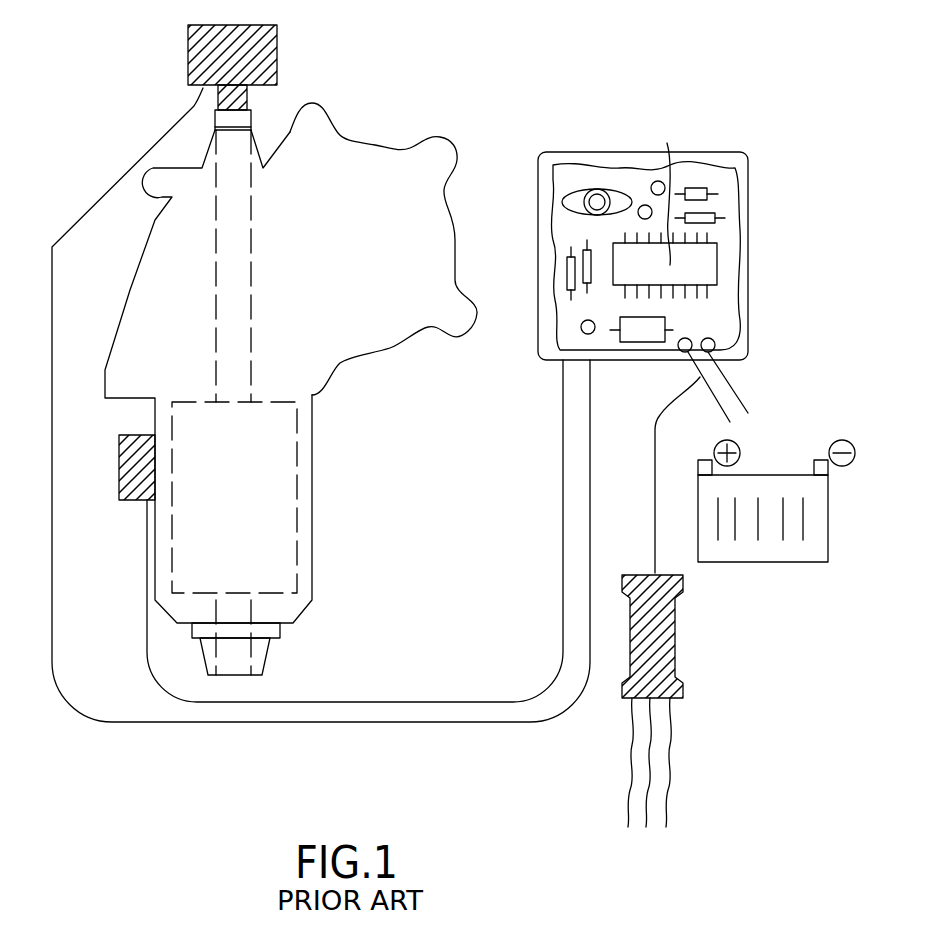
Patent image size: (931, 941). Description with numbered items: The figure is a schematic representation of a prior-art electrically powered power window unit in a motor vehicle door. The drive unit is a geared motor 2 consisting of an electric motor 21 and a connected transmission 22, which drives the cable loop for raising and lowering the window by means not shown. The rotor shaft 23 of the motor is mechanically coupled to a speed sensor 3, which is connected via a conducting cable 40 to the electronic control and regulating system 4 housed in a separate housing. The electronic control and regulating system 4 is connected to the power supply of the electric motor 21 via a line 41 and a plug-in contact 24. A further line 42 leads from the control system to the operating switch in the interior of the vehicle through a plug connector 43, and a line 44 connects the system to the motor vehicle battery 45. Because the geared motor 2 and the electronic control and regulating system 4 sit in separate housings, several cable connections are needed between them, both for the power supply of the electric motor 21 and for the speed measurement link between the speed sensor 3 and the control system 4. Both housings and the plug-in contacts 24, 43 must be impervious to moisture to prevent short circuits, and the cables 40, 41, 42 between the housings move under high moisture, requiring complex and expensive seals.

The geared motor 2 is at (355, 394).
The speed sensor 3 is at (265, 45).
The electronic control and regulating system 4 is at (712, 265).
The electric motor 21 is at (278, 582).
The transmission 22 is at (383, 173).
The rotor shaft 23 is at (214, 276).
The plug-in contact 24 is at (137, 483).
The cable 40 is at (103, 722).
The line 41 is at (297, 702).
The line 42 is at (653, 498).
The plug-in contact 43 is at (667, 660).
The line 44 is at (738, 392).
The motor vehicle battery 45 is at (767, 552).